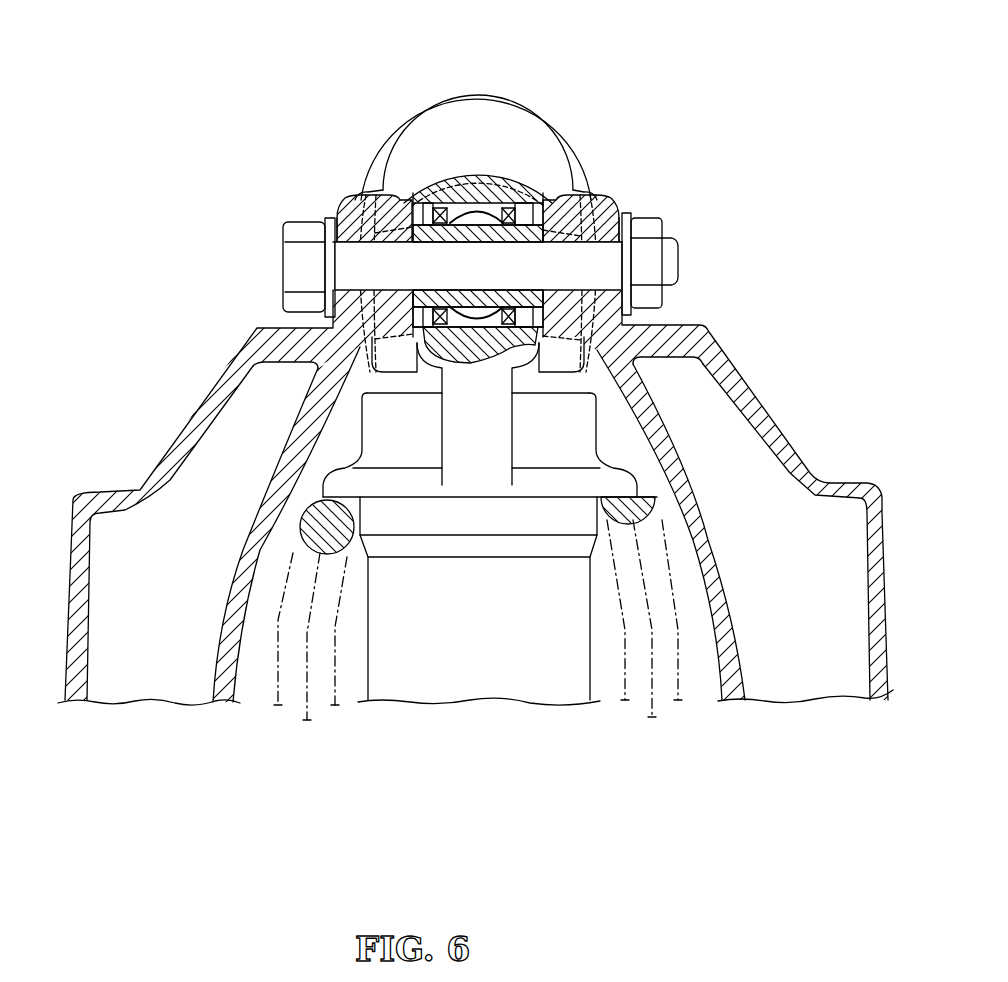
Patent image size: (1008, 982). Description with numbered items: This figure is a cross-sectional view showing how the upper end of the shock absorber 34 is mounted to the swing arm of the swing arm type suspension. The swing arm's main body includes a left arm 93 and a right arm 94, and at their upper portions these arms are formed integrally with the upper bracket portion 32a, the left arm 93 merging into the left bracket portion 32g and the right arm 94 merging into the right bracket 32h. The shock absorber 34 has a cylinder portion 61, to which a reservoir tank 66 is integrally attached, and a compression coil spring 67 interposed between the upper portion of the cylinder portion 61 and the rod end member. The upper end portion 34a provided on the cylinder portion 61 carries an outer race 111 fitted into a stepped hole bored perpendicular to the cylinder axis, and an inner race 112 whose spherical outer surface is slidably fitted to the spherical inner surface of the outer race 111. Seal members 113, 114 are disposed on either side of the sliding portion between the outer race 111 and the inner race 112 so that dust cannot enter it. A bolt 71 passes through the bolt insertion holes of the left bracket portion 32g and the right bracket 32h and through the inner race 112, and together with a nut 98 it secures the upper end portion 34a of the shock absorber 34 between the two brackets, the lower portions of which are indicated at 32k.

The shock absorber 34 is at (453, 657).
The upper end portion 34a is at (476, 190).
The cylinder portion 61 is at (558, 690).
The reservoir tank 66 is at (415, 103).
The compression coil spring 67 is at (317, 507).
The bolt 71 is at (297, 266).
The left arm 93 is at (890, 663).
The right arm 94 is at (47, 683).
The nut 98 is at (652, 267).
The outer race 111 is at (507, 178).
The inner race 112 is at (440, 173).
The seal member 113 is at (588, 193).
The seal member 114 is at (370, 193).
The upper bracket portion 32a is at (337, 207).
The left bracket portion 32g is at (600, 208).
The right bracket 32h is at (355, 208).
The lower hub lobes 32k is at (430, 345).